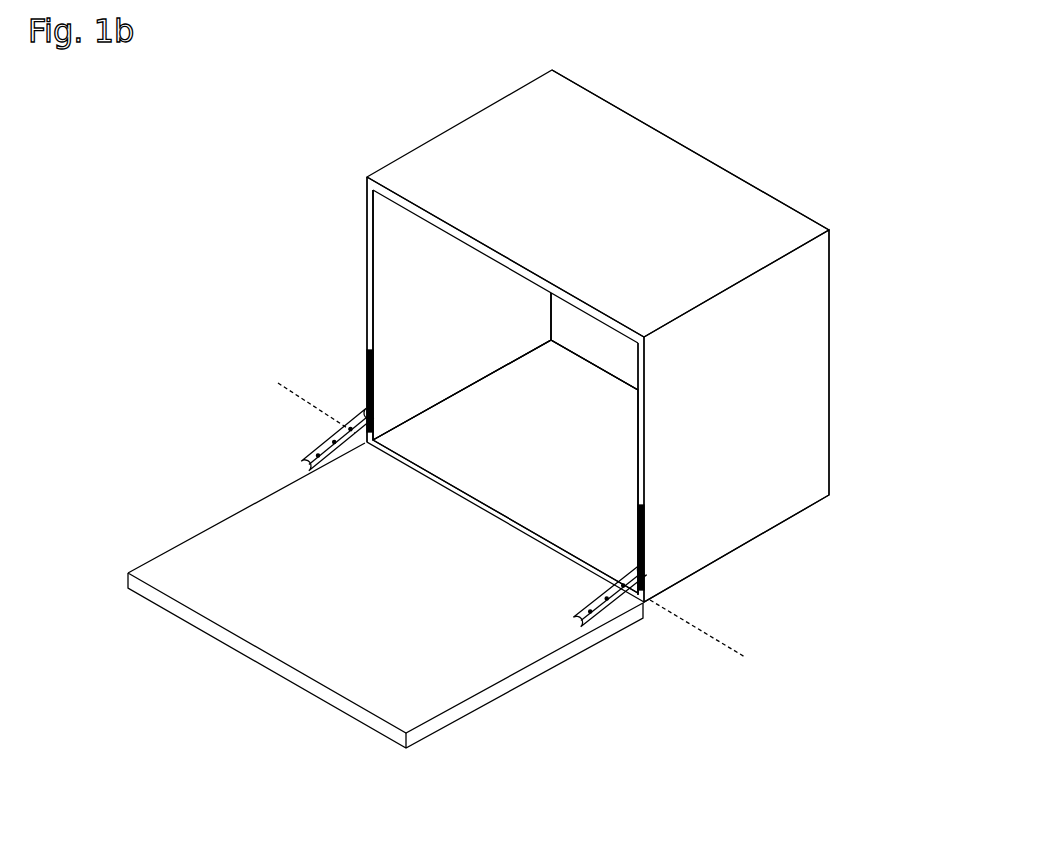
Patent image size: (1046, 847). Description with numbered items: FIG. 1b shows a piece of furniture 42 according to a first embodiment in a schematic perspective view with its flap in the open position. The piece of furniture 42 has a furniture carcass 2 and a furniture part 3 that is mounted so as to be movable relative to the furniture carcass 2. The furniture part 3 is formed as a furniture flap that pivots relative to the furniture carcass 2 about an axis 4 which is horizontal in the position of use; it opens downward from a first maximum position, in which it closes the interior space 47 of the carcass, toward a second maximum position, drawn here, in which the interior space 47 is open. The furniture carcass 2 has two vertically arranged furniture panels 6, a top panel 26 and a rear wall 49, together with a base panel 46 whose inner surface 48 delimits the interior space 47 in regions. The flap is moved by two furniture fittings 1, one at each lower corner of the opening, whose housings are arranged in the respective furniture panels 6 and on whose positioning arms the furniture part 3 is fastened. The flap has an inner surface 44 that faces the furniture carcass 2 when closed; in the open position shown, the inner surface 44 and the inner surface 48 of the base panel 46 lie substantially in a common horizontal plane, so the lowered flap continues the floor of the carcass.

The furniture fitting 1 is at (298, 416).
The furniture carcass 2 is at (722, 178).
The furniture part 3 is at (360, 595).
The axis 4 is at (705, 634).
The furniture panel 6 is at (367, 275).
The top panel 26 is at (635, 140).
The piece of furniture 42 is at (550, 315).
The inner surface 44 is at (232, 543).
The base panel 46 is at (615, 455).
The interior space 47 is at (398, 323).
The inner surface 48 is at (548, 512).
The rear wall 49 is at (593, 338).